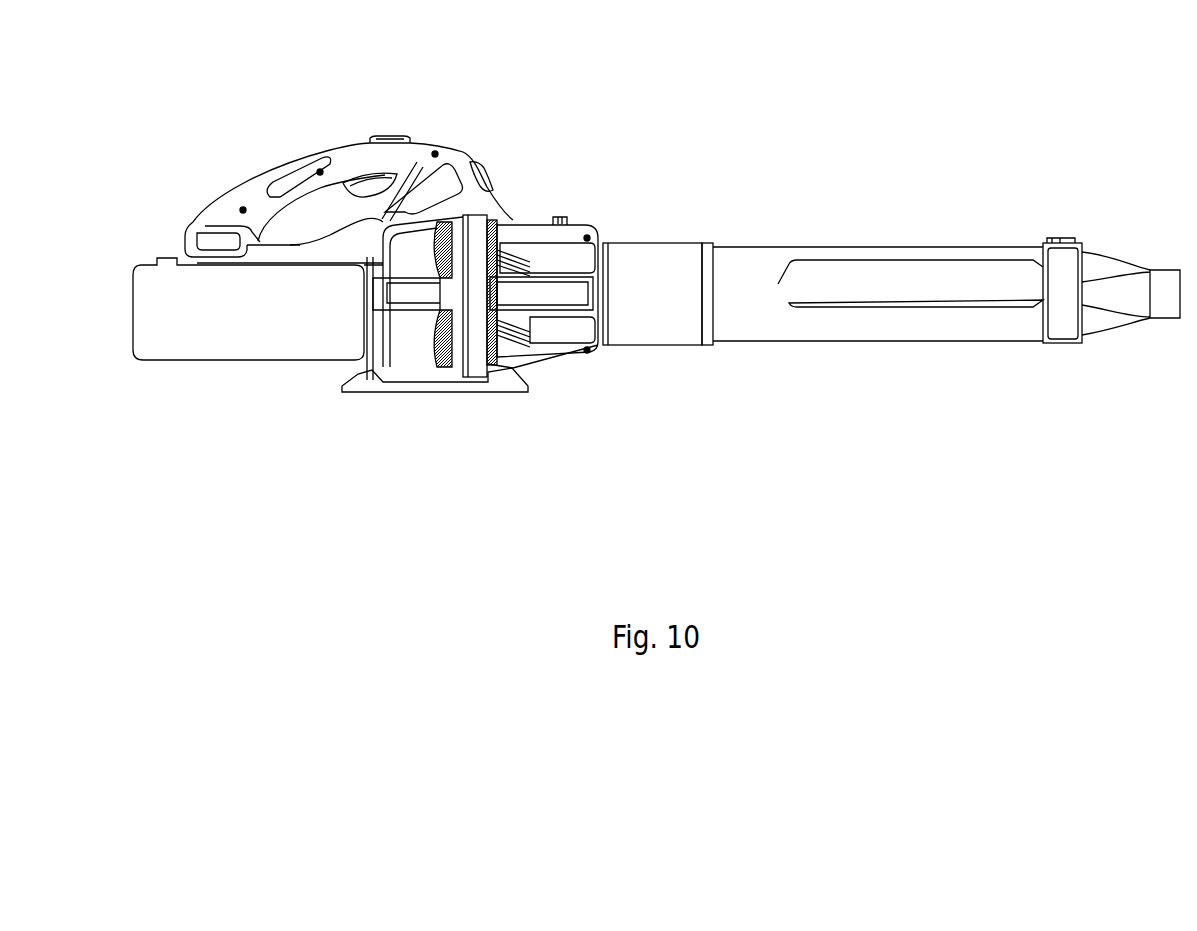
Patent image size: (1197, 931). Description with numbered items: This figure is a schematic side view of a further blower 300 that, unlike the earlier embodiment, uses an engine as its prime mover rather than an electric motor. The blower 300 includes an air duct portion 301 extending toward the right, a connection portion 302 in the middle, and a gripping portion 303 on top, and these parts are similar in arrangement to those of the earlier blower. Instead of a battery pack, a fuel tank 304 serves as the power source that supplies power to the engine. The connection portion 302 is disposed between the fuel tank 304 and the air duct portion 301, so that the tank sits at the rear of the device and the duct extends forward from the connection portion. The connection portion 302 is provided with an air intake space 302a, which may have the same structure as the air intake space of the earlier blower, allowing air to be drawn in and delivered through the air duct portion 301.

The blower 300 is at (770, 121).
The air duct portion 301 is at (767, 248).
The connection portion 302 is at (420, 300).
The air intake space 302a is at (431, 360).
The gripping portion 303 is at (303, 181).
The fuel tank 304 is at (237, 324).